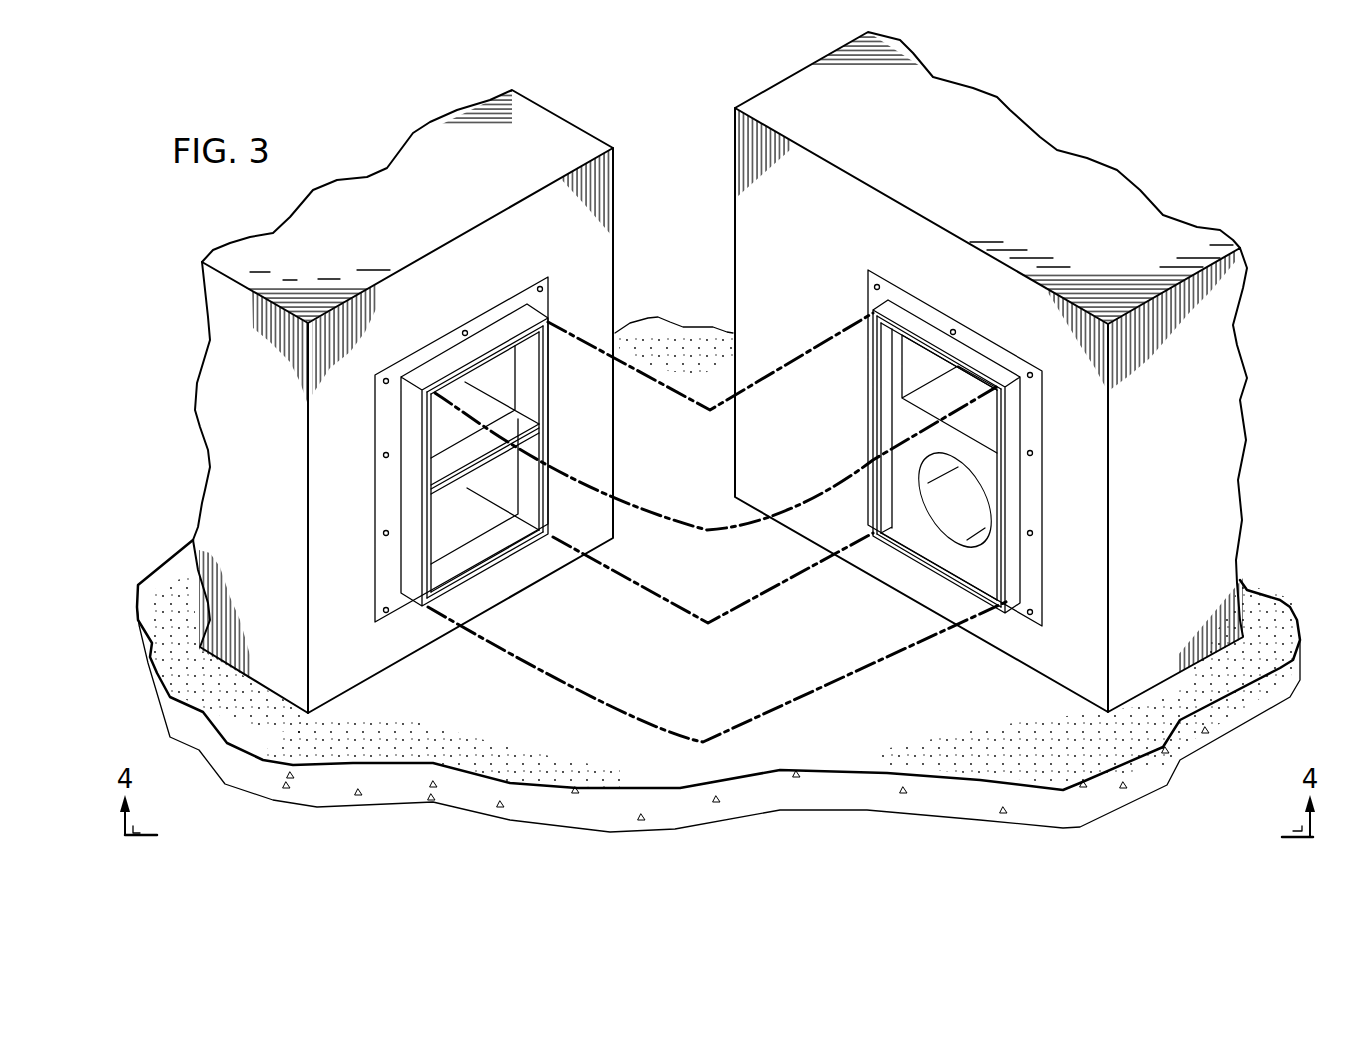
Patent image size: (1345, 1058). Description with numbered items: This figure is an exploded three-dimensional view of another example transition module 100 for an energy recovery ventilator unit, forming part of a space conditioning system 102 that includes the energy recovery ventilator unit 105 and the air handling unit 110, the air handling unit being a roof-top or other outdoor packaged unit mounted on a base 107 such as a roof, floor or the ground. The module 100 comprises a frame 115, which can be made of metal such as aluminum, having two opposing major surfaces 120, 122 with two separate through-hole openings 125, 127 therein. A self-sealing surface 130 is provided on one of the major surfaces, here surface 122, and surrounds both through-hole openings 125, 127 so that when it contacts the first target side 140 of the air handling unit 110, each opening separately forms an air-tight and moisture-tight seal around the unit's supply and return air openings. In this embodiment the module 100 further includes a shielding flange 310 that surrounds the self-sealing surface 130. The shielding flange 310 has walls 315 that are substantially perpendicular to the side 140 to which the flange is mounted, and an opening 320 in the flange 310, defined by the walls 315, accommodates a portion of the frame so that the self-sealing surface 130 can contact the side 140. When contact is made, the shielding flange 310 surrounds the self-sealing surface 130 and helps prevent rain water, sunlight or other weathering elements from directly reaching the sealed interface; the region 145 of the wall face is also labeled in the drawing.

The transition module 100 is at (438, 325).
The space conditioning system 102 is at (1157, 125).
The energy recovery ventilator unit 105 is at (372, 168).
The base 107 is at (165, 575).
The air handling unit 110 is at (1028, 122).
The frame 115 is at (412, 415).
The major surface 120 is at (385, 498).
The major surface 122 is at (467, 578).
The through-hole opening 125 is at (498, 383).
The through-hole opening 127 is at (467, 522).
The self-sealing surface 130 is at (496, 353).
The side 140 is at (1063, 625).
The first wall surface 145 is at (345, 613).
The shielding flange 310 is at (1012, 423).
The walls 315 is at (960, 570).
The opening 320 is at (912, 420).